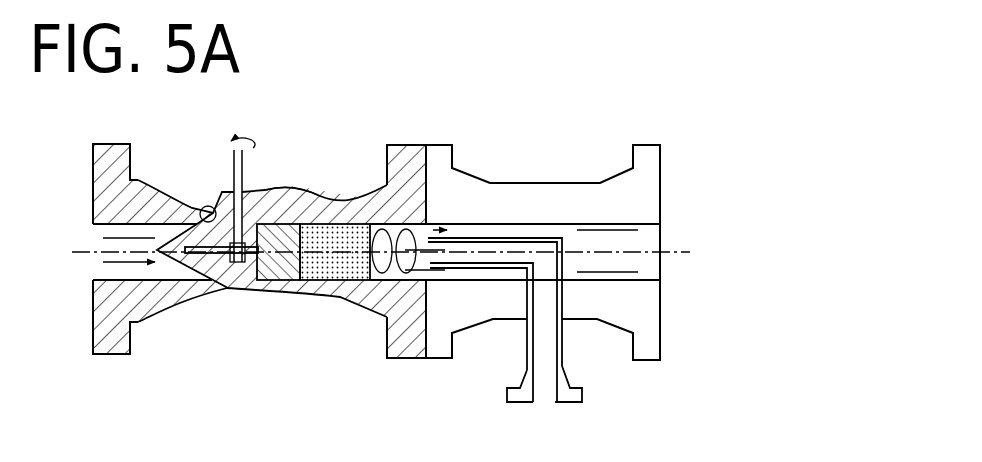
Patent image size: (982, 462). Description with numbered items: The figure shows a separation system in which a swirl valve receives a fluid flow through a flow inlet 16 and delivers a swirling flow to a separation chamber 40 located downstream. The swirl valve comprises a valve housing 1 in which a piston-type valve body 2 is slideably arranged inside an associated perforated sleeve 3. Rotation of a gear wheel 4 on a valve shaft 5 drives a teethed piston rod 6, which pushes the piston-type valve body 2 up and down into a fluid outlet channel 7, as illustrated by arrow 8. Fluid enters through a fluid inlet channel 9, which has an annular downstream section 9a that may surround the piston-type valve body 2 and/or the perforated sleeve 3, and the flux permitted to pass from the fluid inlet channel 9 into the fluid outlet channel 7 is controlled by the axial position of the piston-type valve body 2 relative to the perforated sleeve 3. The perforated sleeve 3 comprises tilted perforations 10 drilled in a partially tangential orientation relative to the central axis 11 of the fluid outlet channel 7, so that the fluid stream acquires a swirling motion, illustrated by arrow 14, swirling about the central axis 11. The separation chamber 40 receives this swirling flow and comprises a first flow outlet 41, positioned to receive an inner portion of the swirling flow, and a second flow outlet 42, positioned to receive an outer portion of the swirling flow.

The valve housing 1 is at (138, 180).
The piston-type valve body 2 is at (282, 278).
The perforated sleeve 3 is at (334, 280).
The gear wheel 4 is at (228, 288).
The valve shaft 5 is at (227, 157).
The teethed piston rod 6 is at (208, 212).
The fluid outlet channel 7 is at (402, 178).
The arrow 8 is at (241, 284).
The fluid inlet channel 9 is at (96, 232).
The annular downstream section 9a is at (321, 208).
The tilted perforations 10 is at (351, 218).
The central axis 11 is at (690, 252).
The arrow 14 is at (412, 274).
The flow inlet 16 is at (92, 268).
The separation chamber 40 is at (543, 178).
The first flow outlet 41 is at (545, 368).
The second flow outlet 42 is at (585, 238).